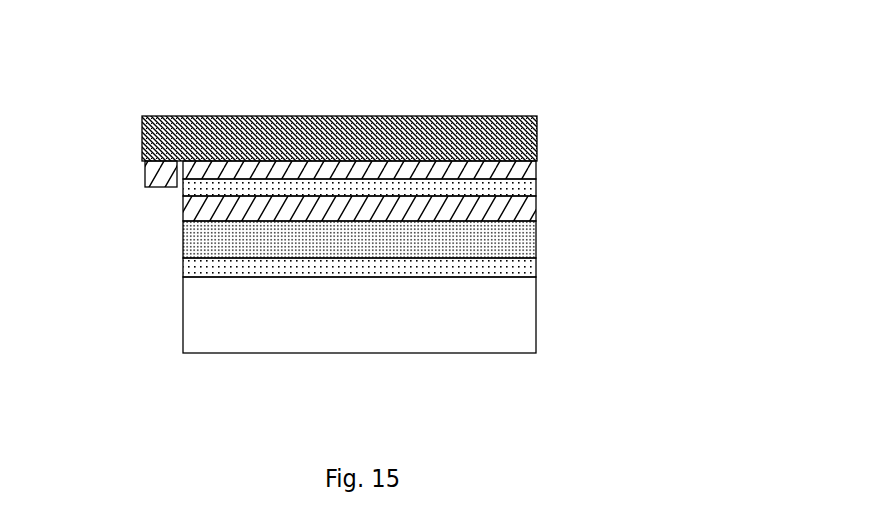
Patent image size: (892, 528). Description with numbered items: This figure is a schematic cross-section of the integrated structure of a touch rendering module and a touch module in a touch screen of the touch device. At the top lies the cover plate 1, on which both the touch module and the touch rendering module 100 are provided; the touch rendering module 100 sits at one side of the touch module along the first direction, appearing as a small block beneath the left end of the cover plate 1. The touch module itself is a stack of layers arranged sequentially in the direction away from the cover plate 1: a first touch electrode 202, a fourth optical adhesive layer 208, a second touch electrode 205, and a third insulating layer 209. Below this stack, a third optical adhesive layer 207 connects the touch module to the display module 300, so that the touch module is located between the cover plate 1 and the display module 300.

The cover plate 1 is at (373, 117).
The touch rendering module 100 is at (158, 188).
The first touch electrode 202 is at (533, 170).
The fourth optical adhesive layer 208 is at (533, 188).
The second touch electrode 205 is at (528, 210).
The third insulating layer 209 is at (534, 250).
The third optical adhesive layer 207 is at (533, 270).
The display module 300 is at (183, 338).